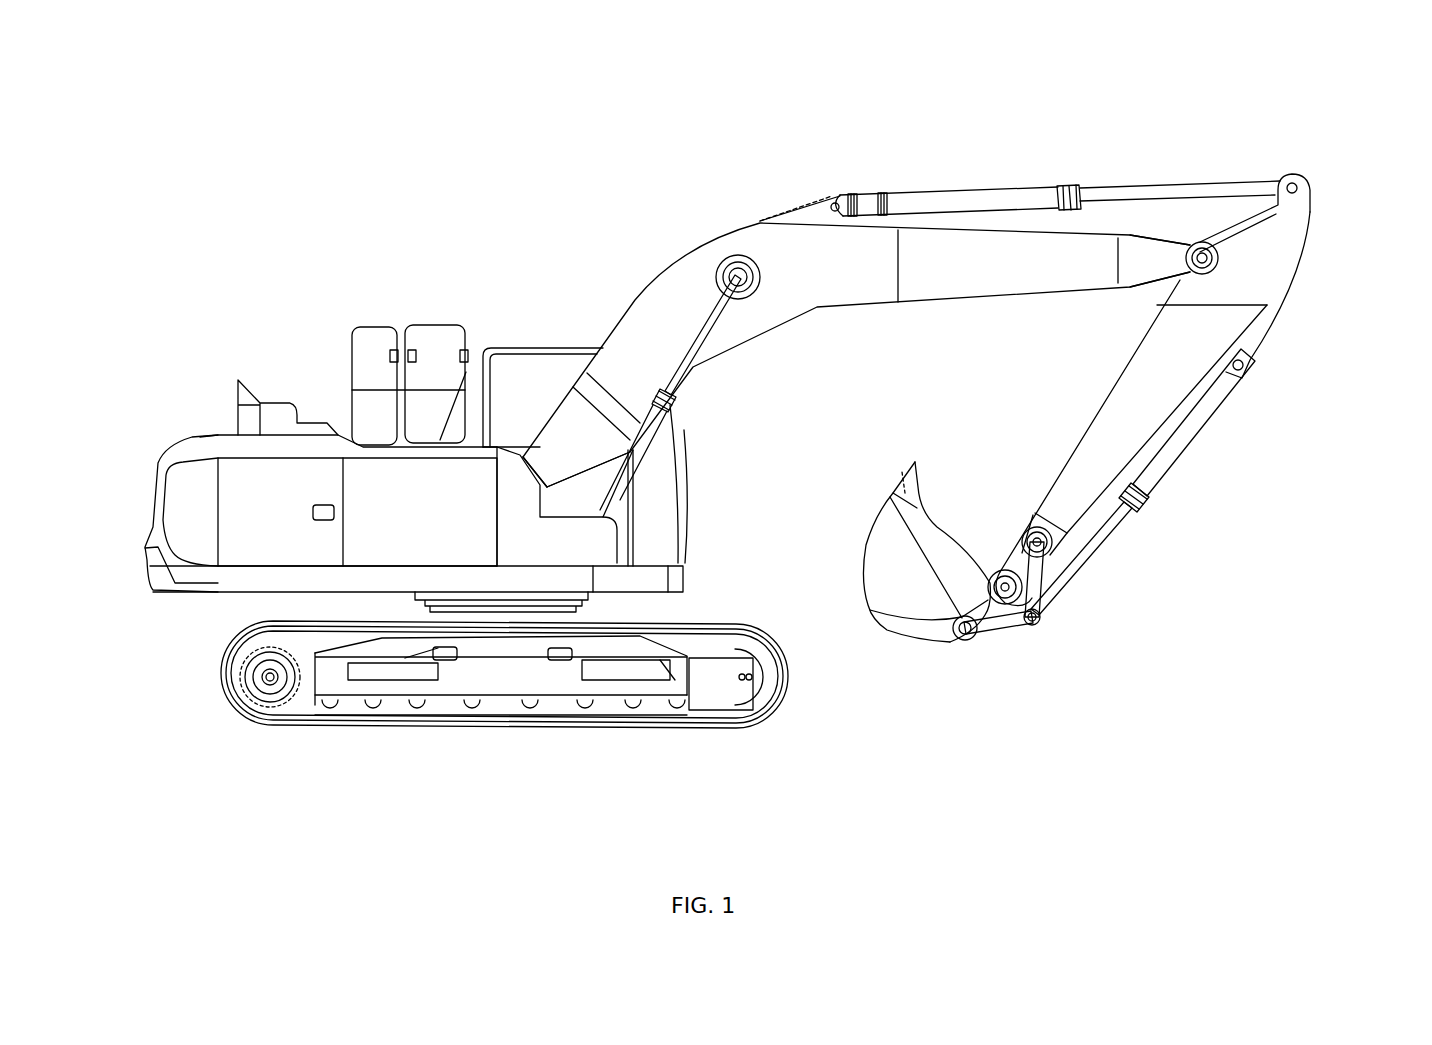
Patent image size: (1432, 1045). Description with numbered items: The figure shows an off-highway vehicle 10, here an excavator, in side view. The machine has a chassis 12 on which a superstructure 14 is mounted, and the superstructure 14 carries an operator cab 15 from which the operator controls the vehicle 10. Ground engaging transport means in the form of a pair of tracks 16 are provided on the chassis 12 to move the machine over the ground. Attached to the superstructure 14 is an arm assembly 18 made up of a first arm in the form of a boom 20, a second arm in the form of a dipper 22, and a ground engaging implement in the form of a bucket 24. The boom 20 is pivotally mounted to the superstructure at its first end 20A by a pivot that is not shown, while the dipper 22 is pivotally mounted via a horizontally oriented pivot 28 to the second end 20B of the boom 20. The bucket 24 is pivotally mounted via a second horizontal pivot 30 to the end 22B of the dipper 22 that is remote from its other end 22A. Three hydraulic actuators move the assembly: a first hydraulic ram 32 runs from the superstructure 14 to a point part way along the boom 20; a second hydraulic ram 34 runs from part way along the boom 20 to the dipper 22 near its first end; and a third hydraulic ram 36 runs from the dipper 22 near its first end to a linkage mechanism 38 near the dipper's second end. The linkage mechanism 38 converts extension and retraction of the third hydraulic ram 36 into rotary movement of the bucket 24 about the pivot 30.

The off-highway vehicle 10 is at (382, 220).
The chassis 12 is at (358, 684).
The superstructure 14 is at (200, 438).
The operator cab 15 is at (558, 360).
The tracks 16 is at (763, 717).
The arm assembly 18 is at (785, 188).
The boom 20 is at (852, 287).
The first end of the boom 20A is at (563, 442).
The second end of the boom 20B is at (1147, 252).
The dipper 22 is at (1207, 335).
The first end of the dipper 22A is at (1277, 233).
The second end of the dipper 22B is at (1063, 533).
The bucket 24 is at (897, 598).
The pivot 28 is at (1200, 247).
The pivot 30 is at (1007, 592).
The first hydraulic ram 32 is at (657, 428).
The second hydraulic ram 34 is at (977, 198).
The third hydraulic ram 36 is at (1198, 415).
The linkage mechanism 38 is at (992, 623).